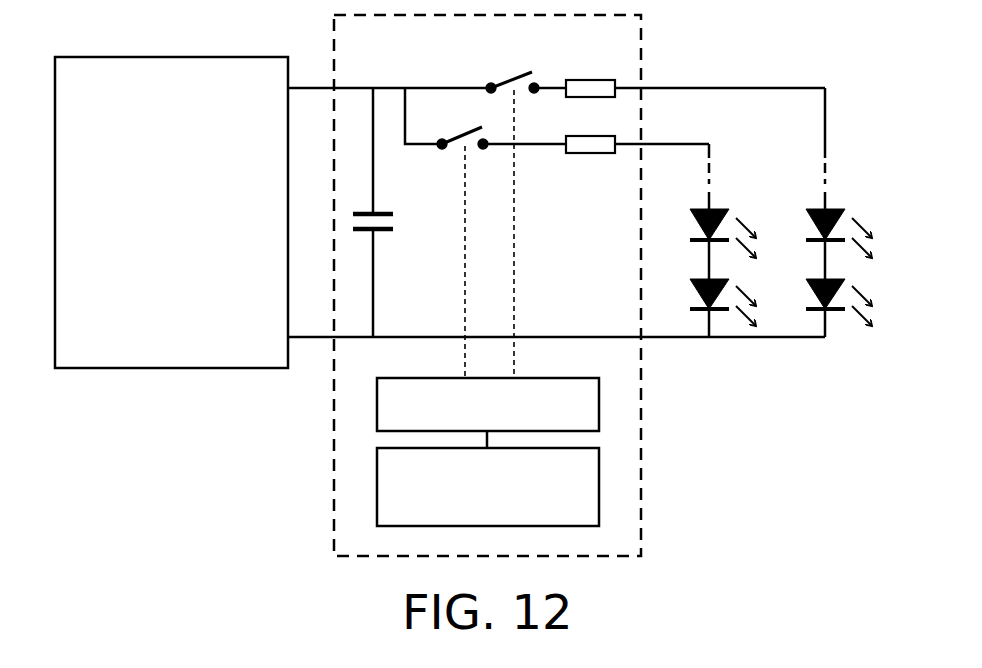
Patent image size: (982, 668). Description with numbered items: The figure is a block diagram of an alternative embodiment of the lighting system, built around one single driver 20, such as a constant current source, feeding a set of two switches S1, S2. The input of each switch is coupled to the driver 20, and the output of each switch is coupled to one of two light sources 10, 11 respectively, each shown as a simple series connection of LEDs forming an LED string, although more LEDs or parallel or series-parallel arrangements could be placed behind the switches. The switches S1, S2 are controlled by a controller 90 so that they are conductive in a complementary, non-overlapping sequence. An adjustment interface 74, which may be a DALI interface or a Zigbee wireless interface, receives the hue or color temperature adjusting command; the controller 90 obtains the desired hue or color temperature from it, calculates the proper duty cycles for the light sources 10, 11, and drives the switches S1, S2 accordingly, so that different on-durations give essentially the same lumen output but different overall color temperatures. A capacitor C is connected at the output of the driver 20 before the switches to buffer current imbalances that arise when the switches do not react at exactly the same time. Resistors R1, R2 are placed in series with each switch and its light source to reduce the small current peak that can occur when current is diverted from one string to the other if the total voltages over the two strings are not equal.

The driver 20 is at (162, 228).
The light source 10 is at (656, 272).
The light source 11 is at (775, 272).
The controller 90 is at (473, 420).
The adjustment interface 74 is at (473, 500).
The capacitor C is at (385, 212).
The switch S1 is at (512, 212).
The switch S2 is at (462, 240).
The resistor R1 is at (590, 74).
The resistor R2 is at (590, 130).